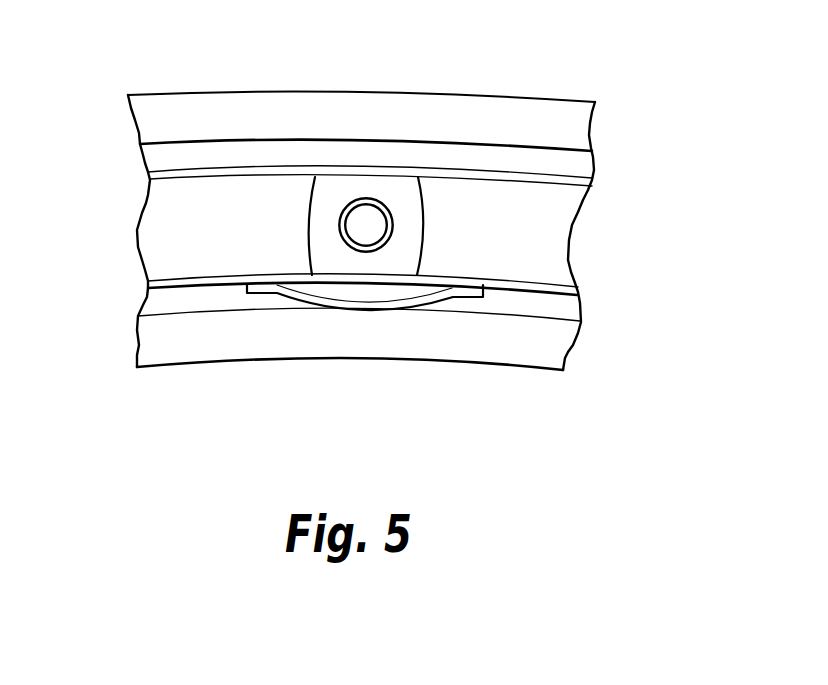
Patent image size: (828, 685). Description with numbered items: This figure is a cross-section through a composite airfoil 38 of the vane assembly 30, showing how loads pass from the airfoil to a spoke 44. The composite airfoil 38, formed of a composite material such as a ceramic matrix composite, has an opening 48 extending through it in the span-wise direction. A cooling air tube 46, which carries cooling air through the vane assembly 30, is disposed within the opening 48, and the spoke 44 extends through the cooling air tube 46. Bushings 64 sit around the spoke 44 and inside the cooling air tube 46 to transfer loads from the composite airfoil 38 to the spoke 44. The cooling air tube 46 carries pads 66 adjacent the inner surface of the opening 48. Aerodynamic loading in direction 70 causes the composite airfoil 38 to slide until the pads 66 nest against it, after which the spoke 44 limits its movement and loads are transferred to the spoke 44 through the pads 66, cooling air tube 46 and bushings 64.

The vane assembly 30 is at (144, 452).
The composite airfoil 38 is at (453, 92).
The spoke 44 is at (390, 236).
The cooling air tube 46 is at (183, 182).
The opening 48 is at (573, 163).
The bushing 64 is at (309, 213).
The pad 66 is at (295, 302).
The direction 70 is at (377, 404).